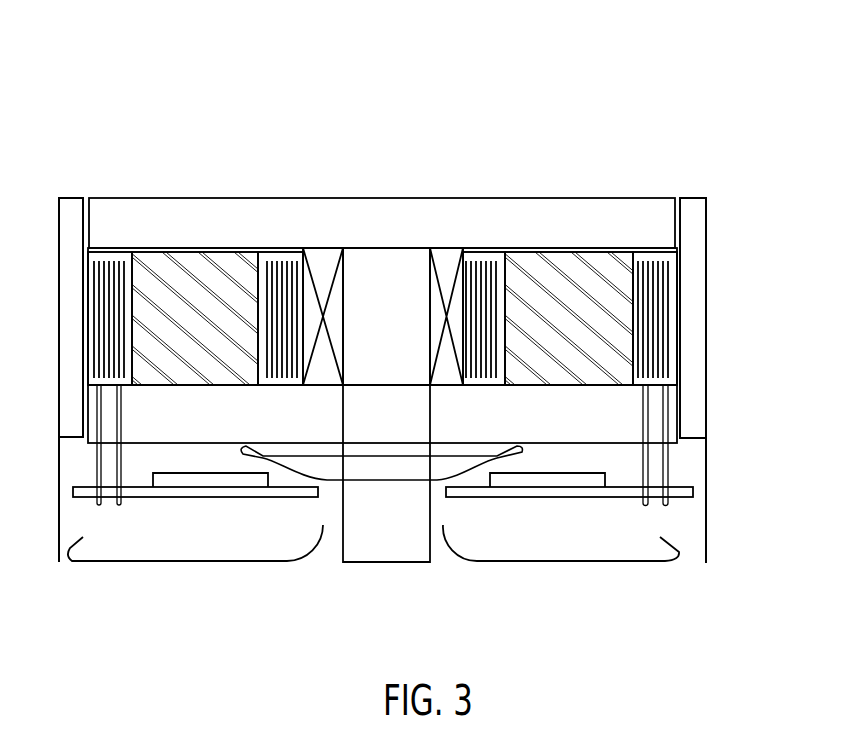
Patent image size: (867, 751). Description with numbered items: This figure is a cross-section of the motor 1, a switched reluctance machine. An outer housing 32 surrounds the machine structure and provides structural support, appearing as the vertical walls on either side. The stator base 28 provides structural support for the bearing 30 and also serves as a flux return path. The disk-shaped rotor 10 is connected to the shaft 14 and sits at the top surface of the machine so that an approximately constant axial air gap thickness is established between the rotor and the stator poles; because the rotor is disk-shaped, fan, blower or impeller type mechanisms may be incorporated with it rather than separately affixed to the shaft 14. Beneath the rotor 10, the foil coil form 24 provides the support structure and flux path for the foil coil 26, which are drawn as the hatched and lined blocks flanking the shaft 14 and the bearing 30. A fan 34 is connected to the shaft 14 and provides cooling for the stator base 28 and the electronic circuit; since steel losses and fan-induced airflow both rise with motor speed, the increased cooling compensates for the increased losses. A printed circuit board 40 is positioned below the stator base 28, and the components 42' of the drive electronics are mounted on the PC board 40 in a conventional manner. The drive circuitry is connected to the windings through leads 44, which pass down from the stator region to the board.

The motor 1 is at (81, 70).
The rotor 10 is at (430, 198).
The shaft 14 is at (393, 562).
The foil coil form 24 is at (210, 252).
The foil coil 26 is at (112, 246).
The stator base 28 is at (673, 445).
The bearing 30 is at (457, 248).
The outer housing 32 is at (707, 353).
The fan 34 is at (333, 482).
The printed circuit (PC) board 40 is at (470, 497).
The components of the drive electronics 42' is at (452, 566).
The leads 44 is at (670, 498).